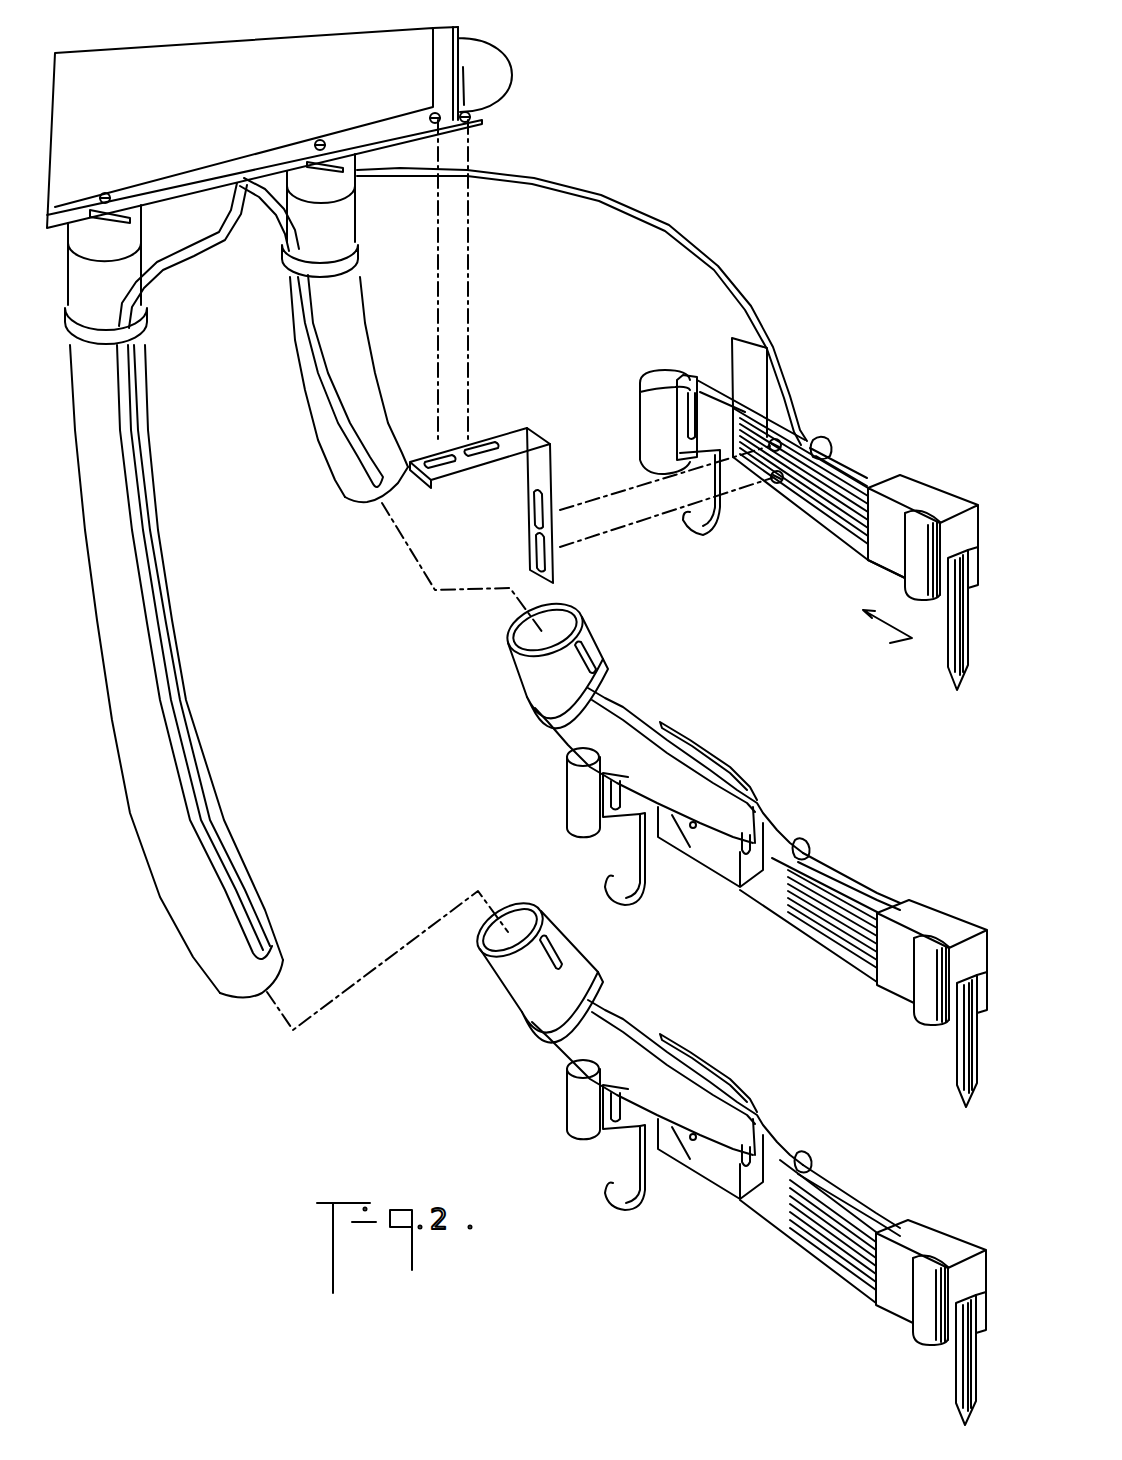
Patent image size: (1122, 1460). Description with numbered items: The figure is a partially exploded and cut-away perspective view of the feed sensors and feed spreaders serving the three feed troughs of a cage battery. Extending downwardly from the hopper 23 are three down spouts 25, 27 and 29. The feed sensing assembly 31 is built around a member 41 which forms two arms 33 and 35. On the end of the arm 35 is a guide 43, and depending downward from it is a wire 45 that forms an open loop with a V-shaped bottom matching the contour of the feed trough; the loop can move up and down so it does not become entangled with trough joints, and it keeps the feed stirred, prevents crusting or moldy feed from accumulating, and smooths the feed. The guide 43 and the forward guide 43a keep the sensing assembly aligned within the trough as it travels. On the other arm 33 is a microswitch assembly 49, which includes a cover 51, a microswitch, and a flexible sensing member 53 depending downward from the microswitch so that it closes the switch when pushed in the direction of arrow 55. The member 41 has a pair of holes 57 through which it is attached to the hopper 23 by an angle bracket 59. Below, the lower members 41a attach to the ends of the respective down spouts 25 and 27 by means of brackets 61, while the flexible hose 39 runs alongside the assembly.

The hopper 23 is at (203, 60).
The down spout 25 is at (147, 427).
The down spout 27 is at (347, 317).
The down spout 29 is at (497, 82).
The feed sensing assembly 31 is at (806, 533).
The arm 33 is at (867, 477).
The arm 35 is at (720, 382).
The flexible hose 39 is at (787, 353).
The member 41 is at (850, 530).
The lower member 41a is at (817, 917).
The guide 43 is at (665, 370).
The forward guide 43a is at (980, 490).
The wire 45 is at (690, 527).
The microswitch assembly 49 is at (920, 487).
The cover 51 is at (877, 570).
The flexible sensing member 53 is at (953, 670).
The arrow 55 is at (882, 637).
The holes 57 is at (802, 427).
The angle bracket 59 is at (530, 440).
The brackets 61 is at (733, 873).